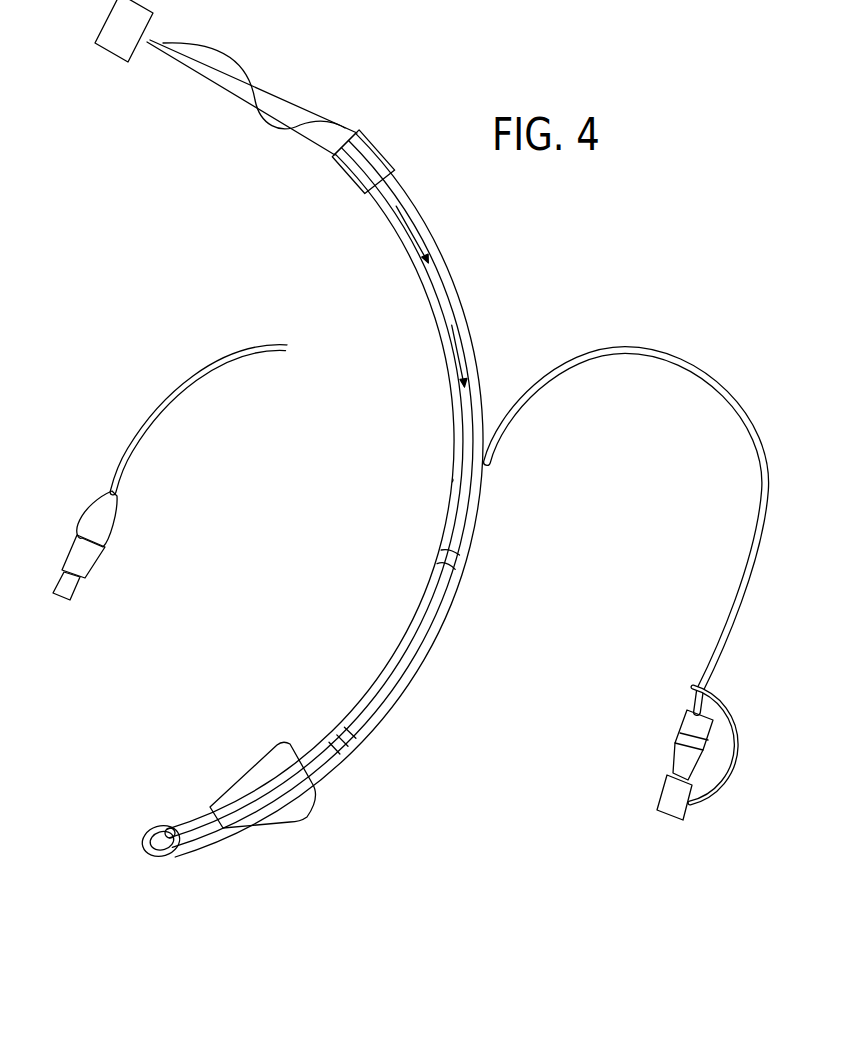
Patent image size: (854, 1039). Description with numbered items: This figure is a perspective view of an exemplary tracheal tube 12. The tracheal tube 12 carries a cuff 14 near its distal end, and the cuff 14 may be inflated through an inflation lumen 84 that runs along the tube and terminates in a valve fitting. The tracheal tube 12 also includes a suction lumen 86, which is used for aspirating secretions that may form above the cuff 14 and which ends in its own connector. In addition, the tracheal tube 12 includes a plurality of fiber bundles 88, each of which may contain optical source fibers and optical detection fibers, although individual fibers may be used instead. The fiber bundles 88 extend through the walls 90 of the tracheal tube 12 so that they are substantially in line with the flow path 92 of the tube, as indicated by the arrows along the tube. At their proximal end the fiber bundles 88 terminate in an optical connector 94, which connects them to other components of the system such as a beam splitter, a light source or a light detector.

The tracheal tube 12 is at (128, 272).
The cuff 14 is at (283, 743).
The inflation lumen 84 is at (123, 457).
The suction lumen 86 is at (660, 352).
The fiber bundles 88 is at (267, 133).
The walls 90 is at (431, 293).
The flow path 92 is at (457, 343).
The optical connector 94 is at (110, 57).